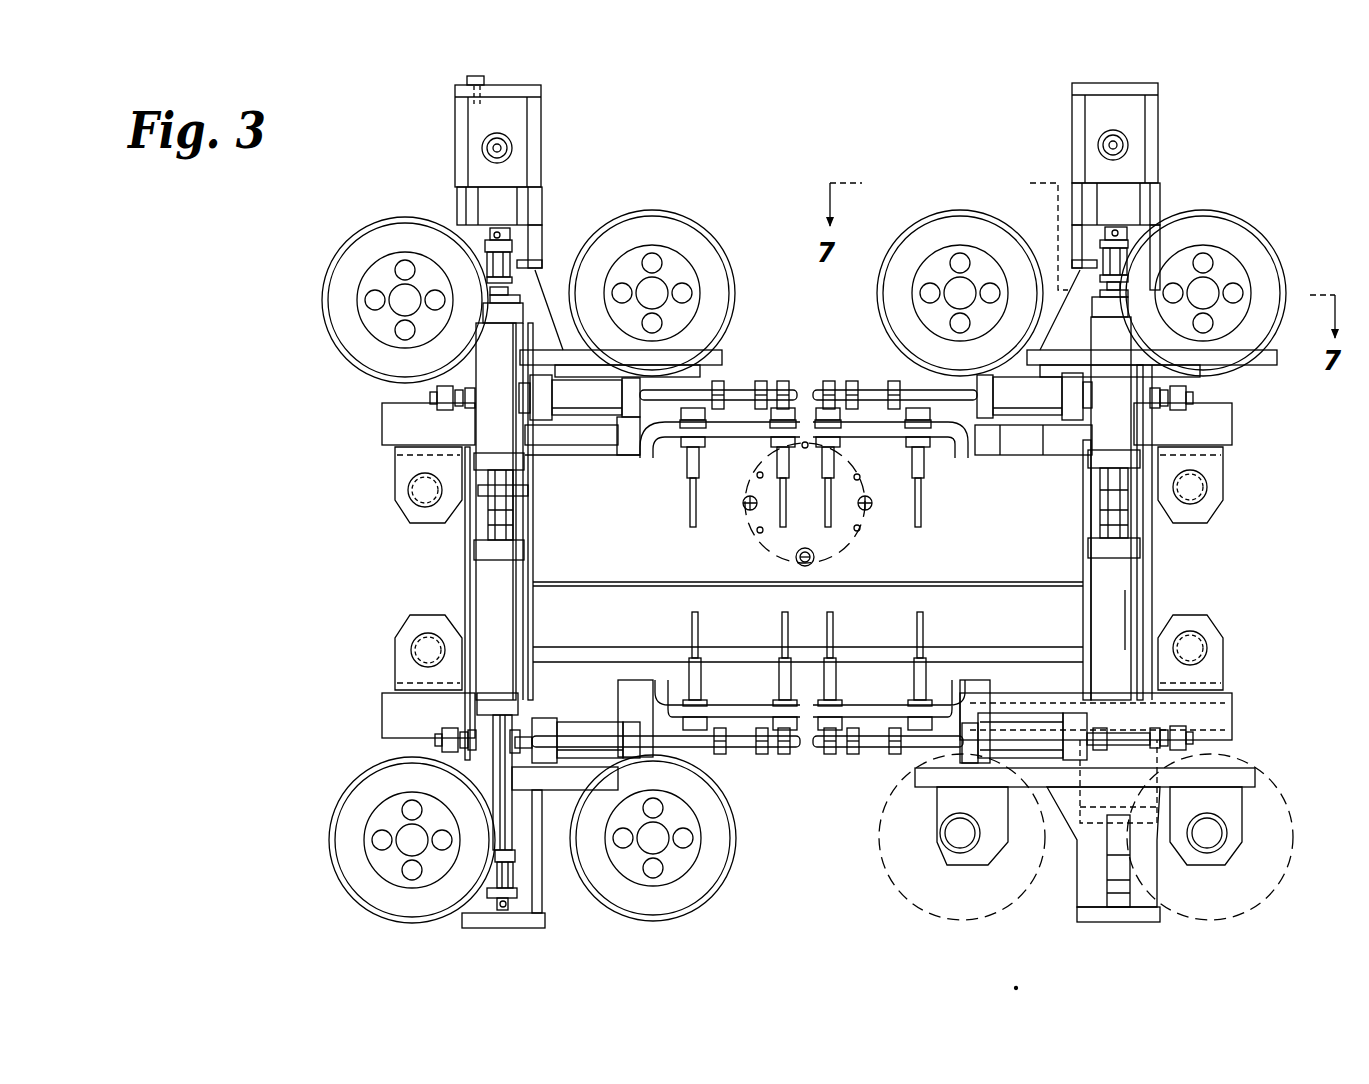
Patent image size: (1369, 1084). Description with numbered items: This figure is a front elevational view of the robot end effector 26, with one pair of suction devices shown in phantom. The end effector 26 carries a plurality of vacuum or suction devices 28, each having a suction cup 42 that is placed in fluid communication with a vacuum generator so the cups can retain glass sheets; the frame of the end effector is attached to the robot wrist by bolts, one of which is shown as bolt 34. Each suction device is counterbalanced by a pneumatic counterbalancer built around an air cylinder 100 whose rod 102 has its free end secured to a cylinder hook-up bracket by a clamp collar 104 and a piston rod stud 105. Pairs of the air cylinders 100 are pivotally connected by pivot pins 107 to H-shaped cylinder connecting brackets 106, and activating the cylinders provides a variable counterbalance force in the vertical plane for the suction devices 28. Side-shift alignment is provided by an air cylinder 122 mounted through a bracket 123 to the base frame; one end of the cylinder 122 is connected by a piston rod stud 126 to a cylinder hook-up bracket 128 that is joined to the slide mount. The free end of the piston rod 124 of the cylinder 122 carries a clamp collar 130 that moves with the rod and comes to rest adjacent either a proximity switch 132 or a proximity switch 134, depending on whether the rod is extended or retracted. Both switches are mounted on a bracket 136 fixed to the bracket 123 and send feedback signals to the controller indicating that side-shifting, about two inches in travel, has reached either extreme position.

The end effector 26 is at (923, 124).
The suction device 28 is at (362, 238).
The bolt 34 is at (822, 565).
The suction cup 42 is at (345, 805).
The air cylinder 100 is at (527, 352).
The rod 102 is at (513, 795).
The clamp collar 104 is at (505, 255).
The piston rod stud 105 is at (500, 232).
The H-shaped cylinder connecting bracket 106 is at (516, 492).
The pivot pin 107 is at (478, 503).
The air cylinder 122 is at (600, 378).
The bracket 123 is at (634, 462).
The piston rod 124 is at (760, 750).
The piston rod stud 126 is at (435, 404).
The cylinder hook-up bracket 128 is at (440, 425).
The clamp collar 130 is at (787, 380).
The proximity switch 132 is at (705, 449).
The proximity switch 134 is at (842, 449).
The bracket 136 is at (733, 410).